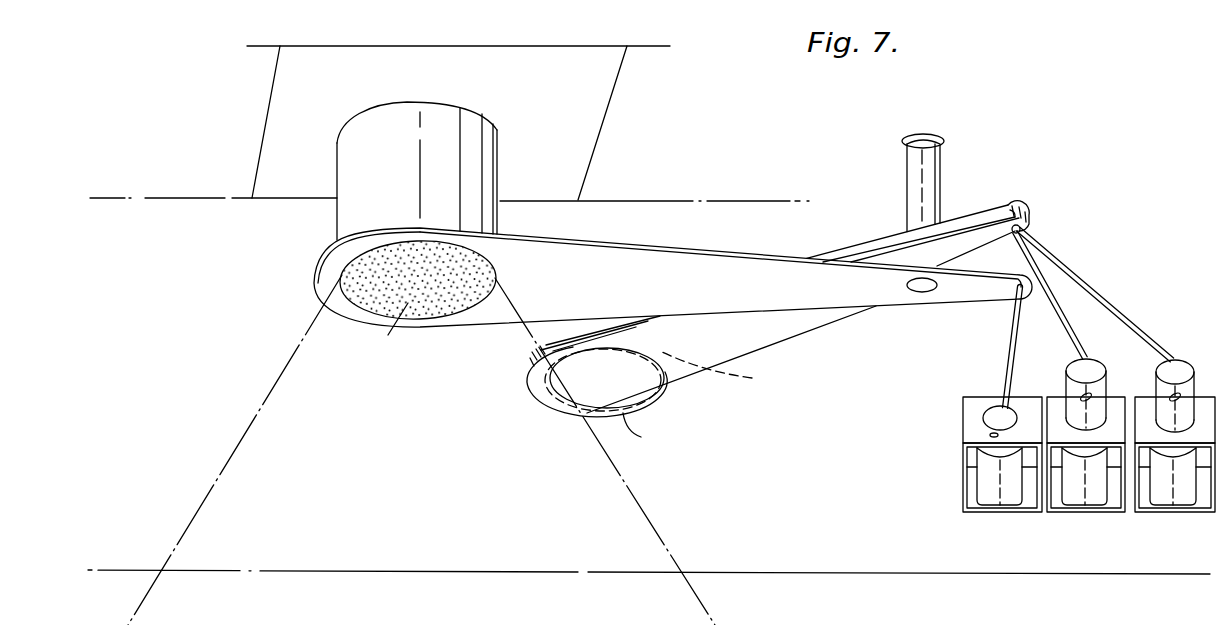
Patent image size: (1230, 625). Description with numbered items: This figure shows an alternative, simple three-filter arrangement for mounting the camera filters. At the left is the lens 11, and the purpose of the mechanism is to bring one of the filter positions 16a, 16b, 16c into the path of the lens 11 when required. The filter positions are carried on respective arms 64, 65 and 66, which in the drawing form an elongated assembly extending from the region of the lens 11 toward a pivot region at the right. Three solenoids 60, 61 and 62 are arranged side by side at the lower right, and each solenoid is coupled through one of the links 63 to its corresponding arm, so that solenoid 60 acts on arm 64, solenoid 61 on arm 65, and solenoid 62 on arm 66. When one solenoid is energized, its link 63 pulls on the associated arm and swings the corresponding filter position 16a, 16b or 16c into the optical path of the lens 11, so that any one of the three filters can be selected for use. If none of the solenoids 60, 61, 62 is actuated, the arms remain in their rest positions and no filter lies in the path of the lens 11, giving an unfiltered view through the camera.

The lens 11 is at (473, 145).
The filter position 16a is at (447, 299).
The filter position 16b is at (580, 417).
The filter position 16c is at (649, 381).
The solenoid 60 is at (1021, 503).
The solenoid 61 is at (1110, 503).
The solenoid 62 is at (1198, 503).
The links 63 is at (1070, 320).
The arm 64 is at (673, 290).
The arm 65 is at (721, 362).
The arm 66 is at (533, 356).